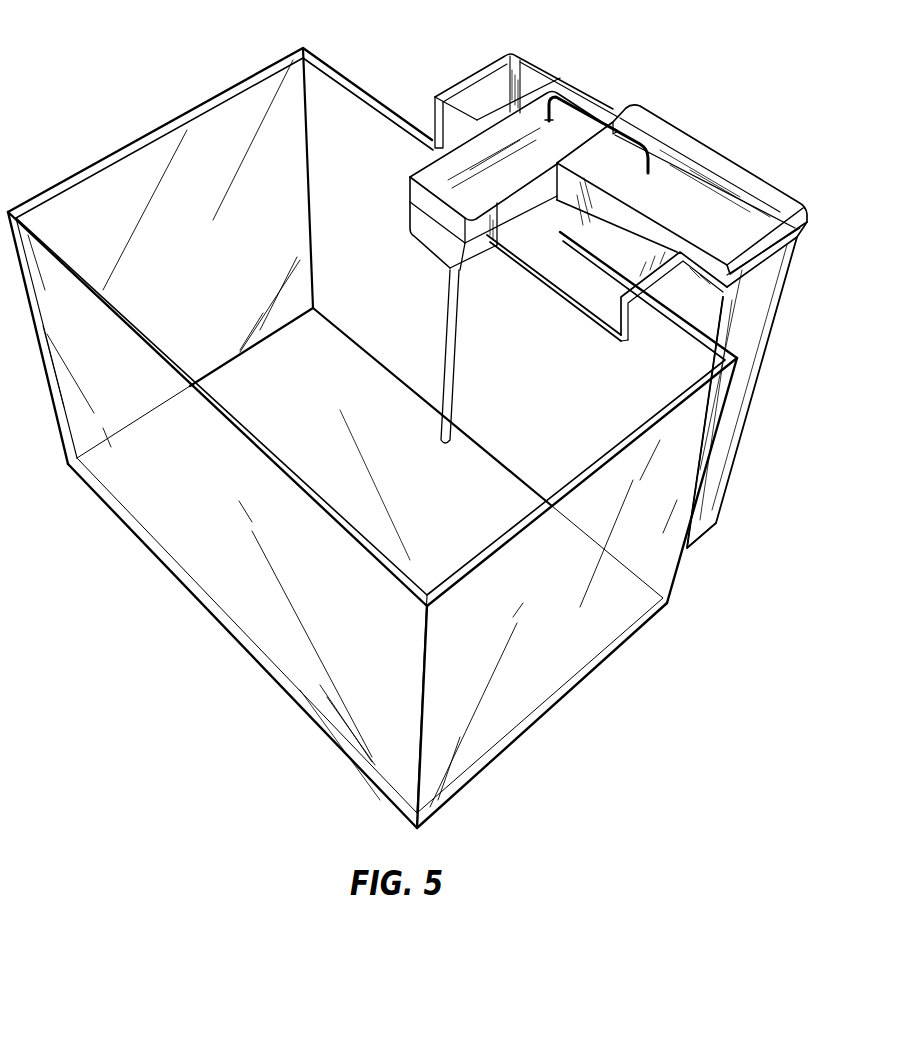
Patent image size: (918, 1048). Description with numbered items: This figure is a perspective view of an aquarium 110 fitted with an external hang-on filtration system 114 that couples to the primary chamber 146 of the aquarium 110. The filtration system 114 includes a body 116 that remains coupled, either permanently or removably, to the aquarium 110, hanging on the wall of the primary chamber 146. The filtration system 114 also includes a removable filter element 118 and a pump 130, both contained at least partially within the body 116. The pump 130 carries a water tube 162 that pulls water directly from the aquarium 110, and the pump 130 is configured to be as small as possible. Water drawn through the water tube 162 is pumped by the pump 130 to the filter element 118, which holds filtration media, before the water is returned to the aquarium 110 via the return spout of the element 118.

The aquarium 110 is at (160, 114).
The pump 130 is at (536, 105).
The water tube 162 is at (440, 344).
The hang-on filtration system 114 is at (795, 349).
The body 116 is at (733, 422).
The removable filter element 118 is at (722, 150).
The primary chamber 146 is at (546, 641).